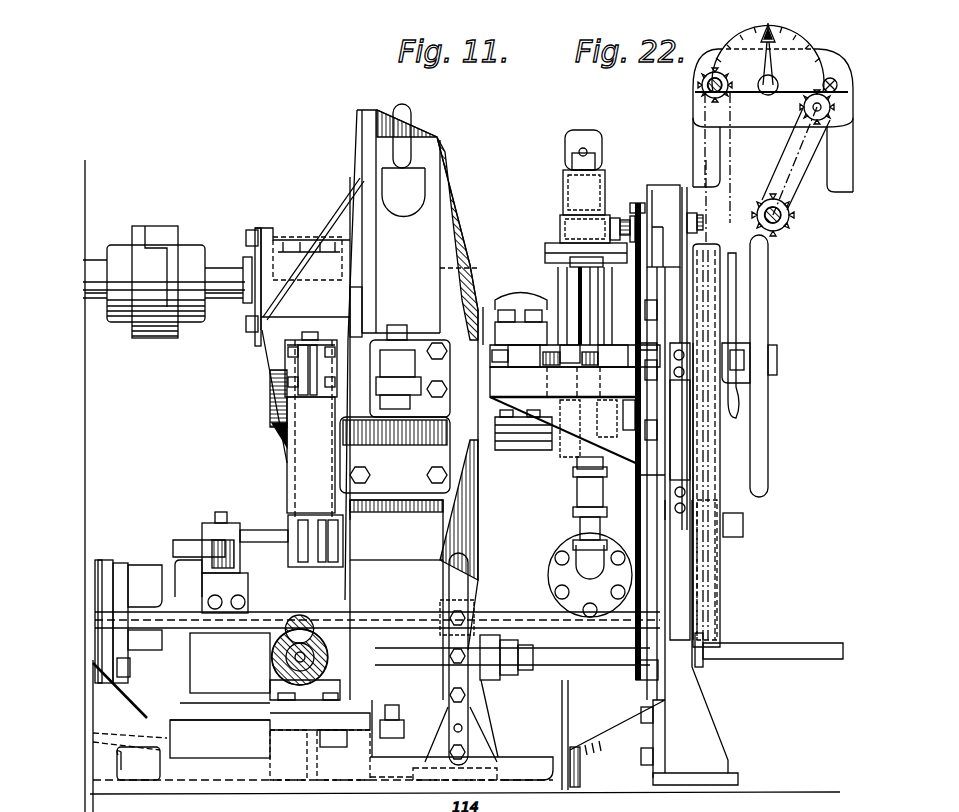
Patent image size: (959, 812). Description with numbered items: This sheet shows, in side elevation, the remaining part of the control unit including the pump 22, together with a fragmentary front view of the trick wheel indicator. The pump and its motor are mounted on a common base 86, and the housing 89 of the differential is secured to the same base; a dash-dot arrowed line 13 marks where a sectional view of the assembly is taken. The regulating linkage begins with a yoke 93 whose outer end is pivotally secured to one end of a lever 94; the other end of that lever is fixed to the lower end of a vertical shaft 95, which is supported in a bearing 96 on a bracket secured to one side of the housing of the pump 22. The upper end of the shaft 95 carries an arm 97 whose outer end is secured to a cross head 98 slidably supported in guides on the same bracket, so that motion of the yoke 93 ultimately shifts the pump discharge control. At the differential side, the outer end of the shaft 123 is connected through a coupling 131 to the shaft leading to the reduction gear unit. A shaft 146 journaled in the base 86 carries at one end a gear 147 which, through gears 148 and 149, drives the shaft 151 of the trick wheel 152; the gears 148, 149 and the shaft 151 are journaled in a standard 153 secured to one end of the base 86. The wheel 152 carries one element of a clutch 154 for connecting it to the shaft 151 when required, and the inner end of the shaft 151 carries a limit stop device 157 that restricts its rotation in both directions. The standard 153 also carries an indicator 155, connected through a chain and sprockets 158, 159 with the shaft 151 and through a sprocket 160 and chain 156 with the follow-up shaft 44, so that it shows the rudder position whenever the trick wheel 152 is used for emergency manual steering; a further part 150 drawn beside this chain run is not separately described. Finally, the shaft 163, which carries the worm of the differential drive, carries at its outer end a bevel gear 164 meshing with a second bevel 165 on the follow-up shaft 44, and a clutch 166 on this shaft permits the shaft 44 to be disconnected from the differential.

In FIG. 11, the section line 13 is at (168, 811).
In FIG. 11, the pump 22 is at (425, 150).
In FIG. 11, the follow-up shaft 44 is at (775, 645).
In FIG. 11, the common base 86 is at (465, 748).
In FIG. 11, the housing of the differential 89 is at (188, 575).
In FIG. 11, the yoke 93 is at (185, 545).
In FIG. 11, the lever 94 is at (263, 530).
In FIG. 11, the vertical shaft 95 is at (294, 450).
In FIG. 11, the bearing 96 is at (285, 435).
In FIG. 11, the arm 97 is at (352, 352).
In FIG. 11, the cross head 98 is at (405, 336).
In FIG. 11, the shaft 123 is at (155, 660).
In FIG. 11, the coupling 131 is at (105, 565).
In FIG. 11, the shaft 146 is at (497, 610).
In FIG. 11, the gear 147 is at (700, 593).
In FIG. 11, the gear 148 is at (720, 480).
In FIG. 11, the gear 149 is at (708, 455).
In FIG. 22, the axis line 150 is at (778, 172).
In FIG. 11, the shaft of the trick wheel 151 is at (722, 343).
In FIG. 22, the shaft of the trick wheel 151 is at (792, 218).
In FIG. 11, the trick wheel 152 is at (768, 283).
In FIG. 11, the standard 153 is at (695, 728).
In FIG. 11, the clutch 154 is at (735, 360).
In FIG. 11, the indicator 155 is at (655, 190).
In FIG. 22, the indicator 155 is at (773, 107).
In FIG. 11, the chain 156 is at (643, 288).
In FIG. 22, the chain 156 is at (730, 158).
In FIG. 11, the limit stop device 157 is at (575, 345).
In FIG. 22, the sprocket 158 is at (802, 118).
In FIG. 22, the sprocket 159 is at (790, 190).
In FIG. 22, the sprocket 160 is at (706, 82).
In FIG. 11, the shaft 163 is at (298, 657).
In FIG. 11, the bevel gear 164 is at (272, 642).
In FIG. 11, the second bevel 165 is at (352, 648).
In FIG. 11, the clutch 166 is at (500, 680).